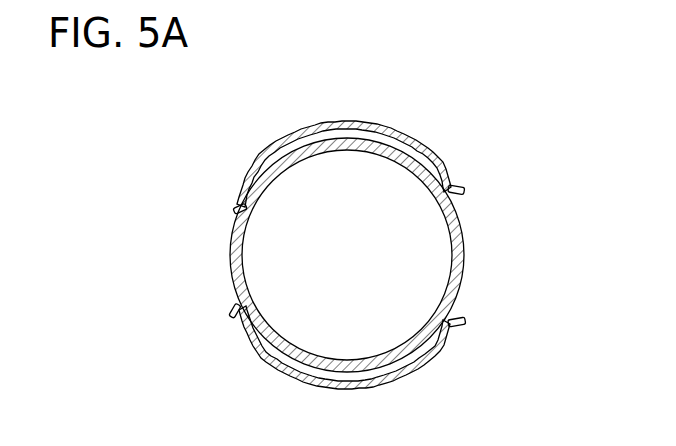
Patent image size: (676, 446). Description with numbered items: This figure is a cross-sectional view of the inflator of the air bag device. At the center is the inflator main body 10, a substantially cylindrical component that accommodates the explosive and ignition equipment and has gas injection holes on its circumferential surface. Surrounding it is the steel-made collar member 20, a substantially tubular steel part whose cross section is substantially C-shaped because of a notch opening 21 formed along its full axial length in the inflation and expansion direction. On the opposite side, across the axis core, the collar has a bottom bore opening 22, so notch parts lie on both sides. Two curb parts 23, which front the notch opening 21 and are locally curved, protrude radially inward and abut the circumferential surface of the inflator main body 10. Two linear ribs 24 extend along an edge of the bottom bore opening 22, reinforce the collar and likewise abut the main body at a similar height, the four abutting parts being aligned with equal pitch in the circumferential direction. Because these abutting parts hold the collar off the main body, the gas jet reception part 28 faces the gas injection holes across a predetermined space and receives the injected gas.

The inflator main body 10 is at (465, 260).
The steel-made collar member 20 is at (434, 377).
The notch opening 21 is at (481, 220).
The bottom bore opening 22 is at (216, 273).
The curb parts 23 is at (435, 188).
The linear ribs 24 is at (246, 198).
The gas jet reception part 28 is at (411, 137).